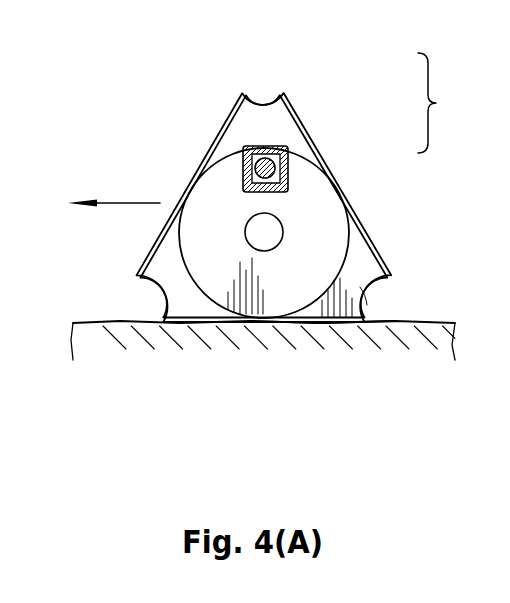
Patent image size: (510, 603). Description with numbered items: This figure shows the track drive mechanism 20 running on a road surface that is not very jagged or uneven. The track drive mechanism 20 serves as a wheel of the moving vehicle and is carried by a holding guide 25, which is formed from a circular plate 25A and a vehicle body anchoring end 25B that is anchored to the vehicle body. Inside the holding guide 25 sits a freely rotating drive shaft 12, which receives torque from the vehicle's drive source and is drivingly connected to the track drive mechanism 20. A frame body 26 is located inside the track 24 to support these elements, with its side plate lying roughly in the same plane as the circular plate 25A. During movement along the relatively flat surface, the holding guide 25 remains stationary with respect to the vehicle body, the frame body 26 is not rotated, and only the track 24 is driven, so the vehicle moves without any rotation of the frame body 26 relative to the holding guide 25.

The drive shaft 12 is at (197, 139).
The track drive mechanism 20 is at (191, 481).
The track 24 is at (261, 170).
The holding guide 25 is at (443, 103).
The circular plate 25A is at (295, 217).
The vehicle body anchoring end 25B is at (335, 117).
The frame body 26 is at (322, 376).